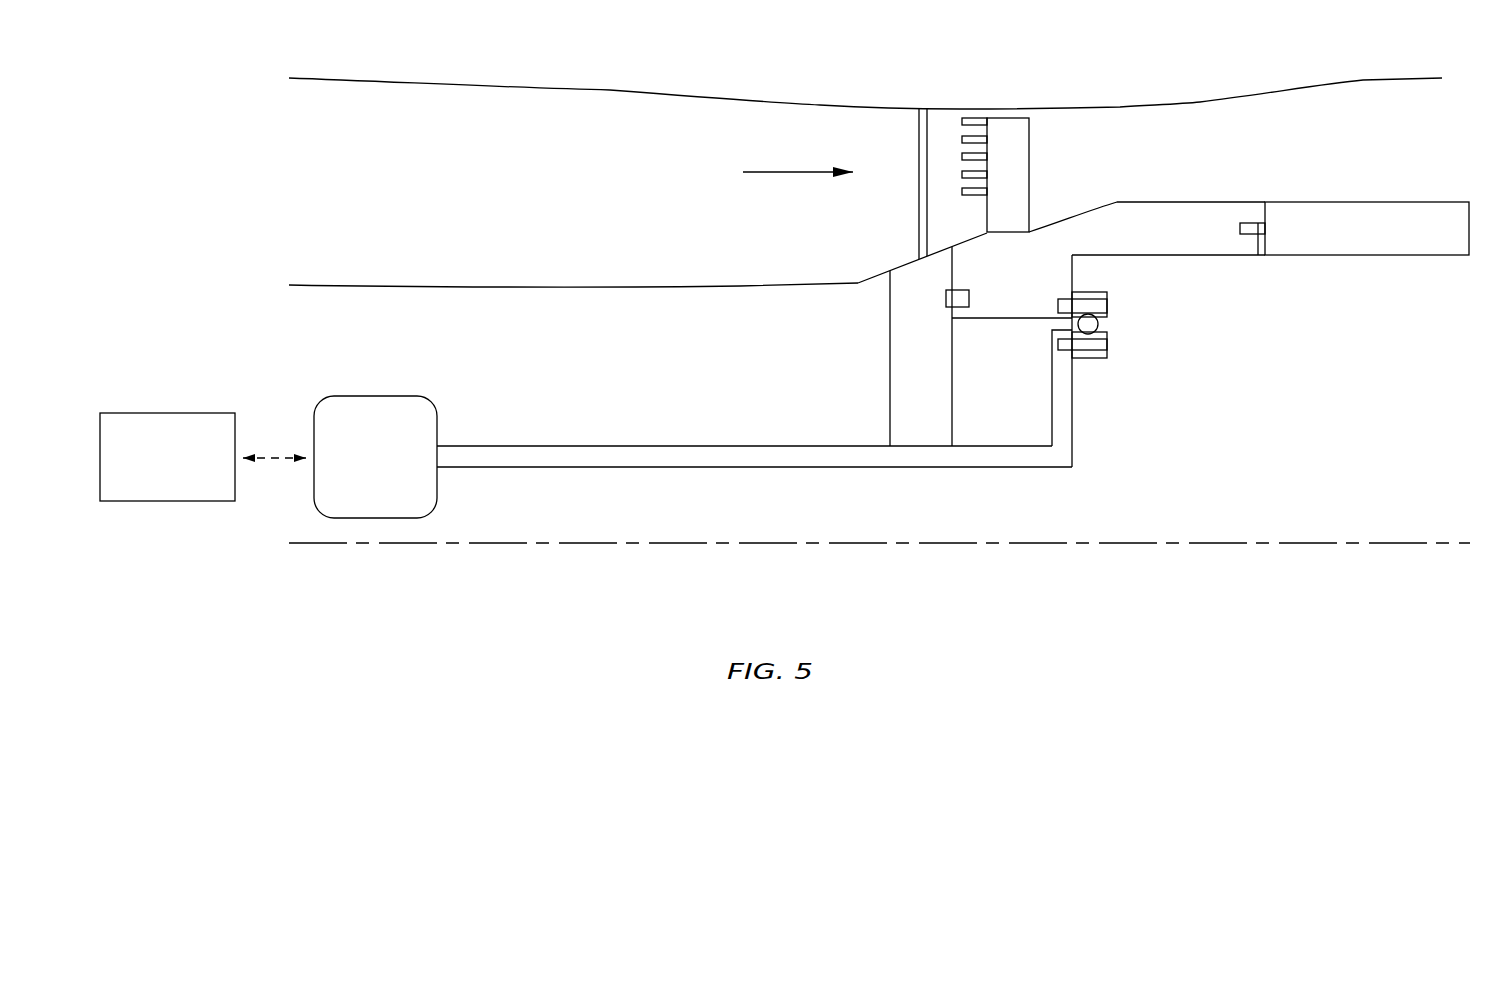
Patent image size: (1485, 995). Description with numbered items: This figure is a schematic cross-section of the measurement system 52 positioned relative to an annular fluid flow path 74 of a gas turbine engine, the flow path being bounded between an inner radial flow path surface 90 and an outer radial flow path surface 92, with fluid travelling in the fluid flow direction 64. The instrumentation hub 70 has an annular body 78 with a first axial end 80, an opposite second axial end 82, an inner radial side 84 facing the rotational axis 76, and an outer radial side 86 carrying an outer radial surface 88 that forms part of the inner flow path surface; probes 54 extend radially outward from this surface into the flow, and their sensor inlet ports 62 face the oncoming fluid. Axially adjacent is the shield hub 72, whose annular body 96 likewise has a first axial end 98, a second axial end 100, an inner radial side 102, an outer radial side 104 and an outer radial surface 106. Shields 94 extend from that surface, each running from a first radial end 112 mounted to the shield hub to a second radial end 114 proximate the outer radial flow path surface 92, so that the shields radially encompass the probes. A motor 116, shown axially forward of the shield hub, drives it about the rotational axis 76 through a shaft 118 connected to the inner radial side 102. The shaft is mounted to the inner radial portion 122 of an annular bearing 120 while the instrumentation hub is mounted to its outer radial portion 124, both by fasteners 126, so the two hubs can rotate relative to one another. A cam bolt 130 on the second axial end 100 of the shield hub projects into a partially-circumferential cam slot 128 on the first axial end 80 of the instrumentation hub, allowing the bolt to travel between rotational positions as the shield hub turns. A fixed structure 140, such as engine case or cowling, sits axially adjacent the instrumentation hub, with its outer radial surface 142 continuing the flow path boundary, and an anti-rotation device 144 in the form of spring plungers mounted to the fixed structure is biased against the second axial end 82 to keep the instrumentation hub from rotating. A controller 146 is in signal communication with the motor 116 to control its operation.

The measurement system 52 is at (1190, 363).
The probes 54 is at (1040, 148).
The sensor inlet ports 62 is at (962, 107).
The fluid flow direction 64 is at (770, 170).
The instrumentation hub 70 is at (1123, 183).
The shield hub 72 is at (835, 325).
The fluid flow path 74 is at (705, 213).
The rotational axis 76 is at (1437, 548).
The annular body 78 is at (1243, 202).
The first axial end 80 is at (947, 277).
The second axial end 82 is at (1268, 243).
The inner radial side 84 is at (978, 323).
The outer radial side 86 is at (1197, 199).
The outer radial surface 88 is at (1218, 226).
The inner radial flow path surface 90 is at (597, 287).
The outer radial flow path surface 92 is at (470, 84).
The shields 94 is at (912, 138).
The annular body 96 is at (902, 393).
The first axial end 98 is at (888, 417).
The second axial end 100 is at (955, 405).
The inner radial side 102 is at (912, 435).
The outer radial side 104 is at (898, 267).
The outer radial surface 106 is at (912, 262).
The first radial end 112 is at (928, 265).
The second radial end 114 is at (920, 107).
The motor 116 is at (355, 497).
The shaft 118 is at (573, 458).
The bearing 120 is at (1125, 307).
The inner radial portion 122 is at (1085, 355).
The outer radial portion 124 is at (1087, 293).
The fasteners 126 is at (1098, 347).
The cam slot 128 is at (972, 300).
The cam bolt 130 is at (947, 298).
The fixed structure 140 is at (1423, 235).
The outer radial surface 142 is at (1405, 198).
The anti-rotation device 144 is at (1251, 228).
The controller 146 is at (190, 489).